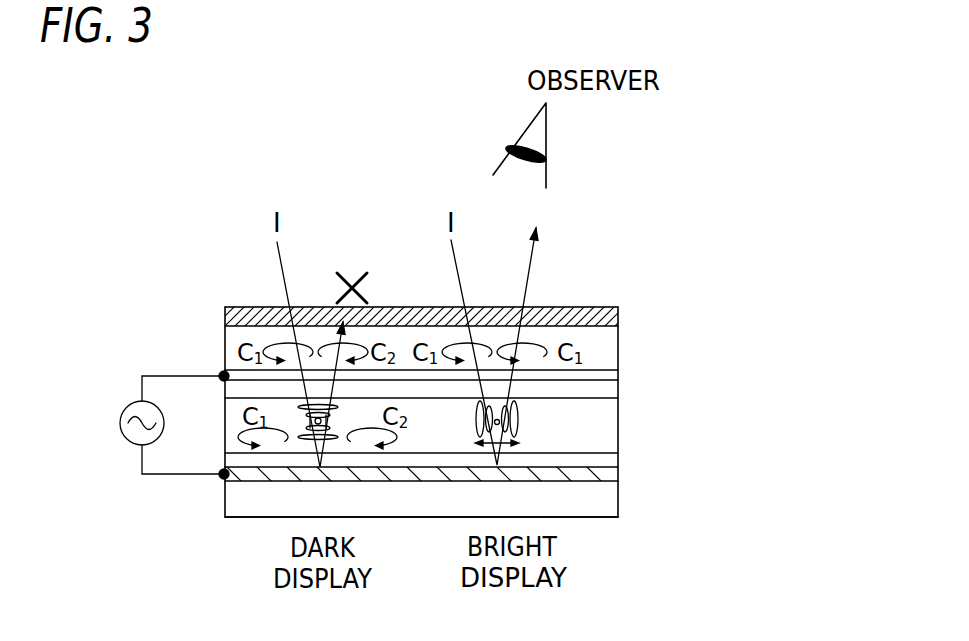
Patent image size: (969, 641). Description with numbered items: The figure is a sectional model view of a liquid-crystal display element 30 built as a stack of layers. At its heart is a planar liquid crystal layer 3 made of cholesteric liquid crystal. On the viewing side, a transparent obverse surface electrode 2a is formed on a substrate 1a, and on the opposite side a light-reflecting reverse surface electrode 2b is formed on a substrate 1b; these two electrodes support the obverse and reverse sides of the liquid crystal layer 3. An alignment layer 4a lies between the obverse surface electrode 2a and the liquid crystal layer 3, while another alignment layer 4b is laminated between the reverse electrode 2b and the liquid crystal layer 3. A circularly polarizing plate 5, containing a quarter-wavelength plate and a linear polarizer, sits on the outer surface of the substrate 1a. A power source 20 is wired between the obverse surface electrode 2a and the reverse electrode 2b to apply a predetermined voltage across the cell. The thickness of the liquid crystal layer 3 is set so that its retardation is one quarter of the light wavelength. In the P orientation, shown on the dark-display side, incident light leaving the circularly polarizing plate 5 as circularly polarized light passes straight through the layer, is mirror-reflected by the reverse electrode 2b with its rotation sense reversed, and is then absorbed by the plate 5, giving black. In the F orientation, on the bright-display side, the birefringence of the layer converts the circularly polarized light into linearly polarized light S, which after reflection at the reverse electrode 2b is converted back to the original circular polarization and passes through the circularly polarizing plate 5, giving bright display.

The liquid-crystal display element 30 is at (608, 258).
The circularly polarizing plate 5 is at (620, 307).
The substrate 1a is at (620, 346).
The transparent obverse surface electrode 2a is at (620, 374).
The alignment layer 4a is at (620, 390).
The liquid crystal layer 3 is at (620, 426).
The alignment layer 4b is at (620, 453).
The reverse surface electrode 2b is at (620, 468).
The substrate 1b is at (620, 503).
The power source 20 is at (122, 424).
The P orientation P is at (329, 421).
The linearly polarized light S is at (474, 421).
The F orientation F is at (524, 421).